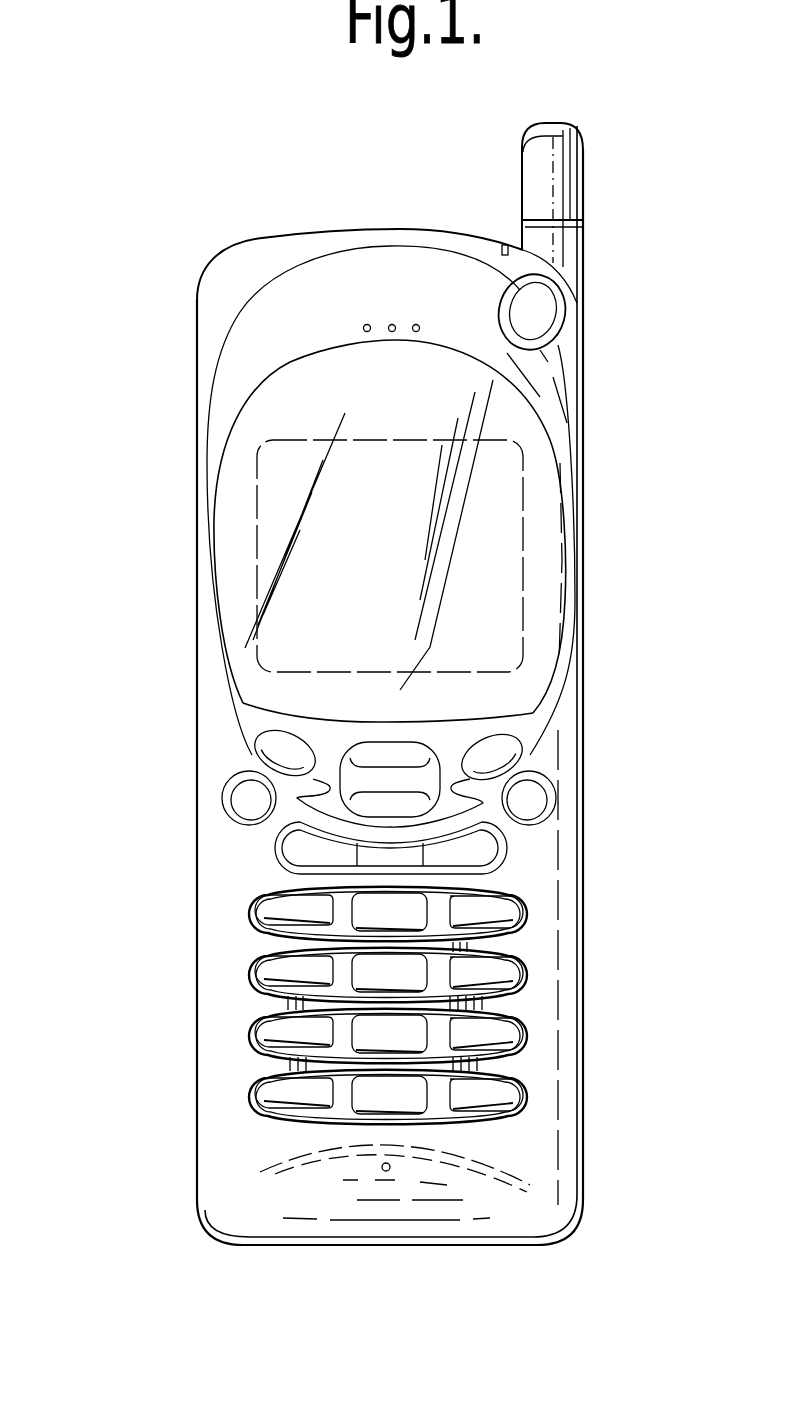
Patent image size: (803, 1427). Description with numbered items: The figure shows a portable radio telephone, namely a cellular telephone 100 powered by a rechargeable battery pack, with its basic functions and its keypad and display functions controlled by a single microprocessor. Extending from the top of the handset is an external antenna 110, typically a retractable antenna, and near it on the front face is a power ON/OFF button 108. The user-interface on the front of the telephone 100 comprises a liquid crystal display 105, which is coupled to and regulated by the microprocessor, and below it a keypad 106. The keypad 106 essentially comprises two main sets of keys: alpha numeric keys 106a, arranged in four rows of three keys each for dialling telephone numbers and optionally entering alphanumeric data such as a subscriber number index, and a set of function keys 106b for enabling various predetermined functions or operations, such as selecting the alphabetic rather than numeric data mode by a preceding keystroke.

The cellular telephone 100 is at (235, 195).
The external antenna 110 is at (562, 180).
The power ON/OFF button 108 is at (537, 320).
The liquid crystal display 105 is at (487, 620).
The keypad 106 is at (615, 755).
The alpha numeric keys 106a is at (161, 895).
The function keys 106b is at (163, 718).